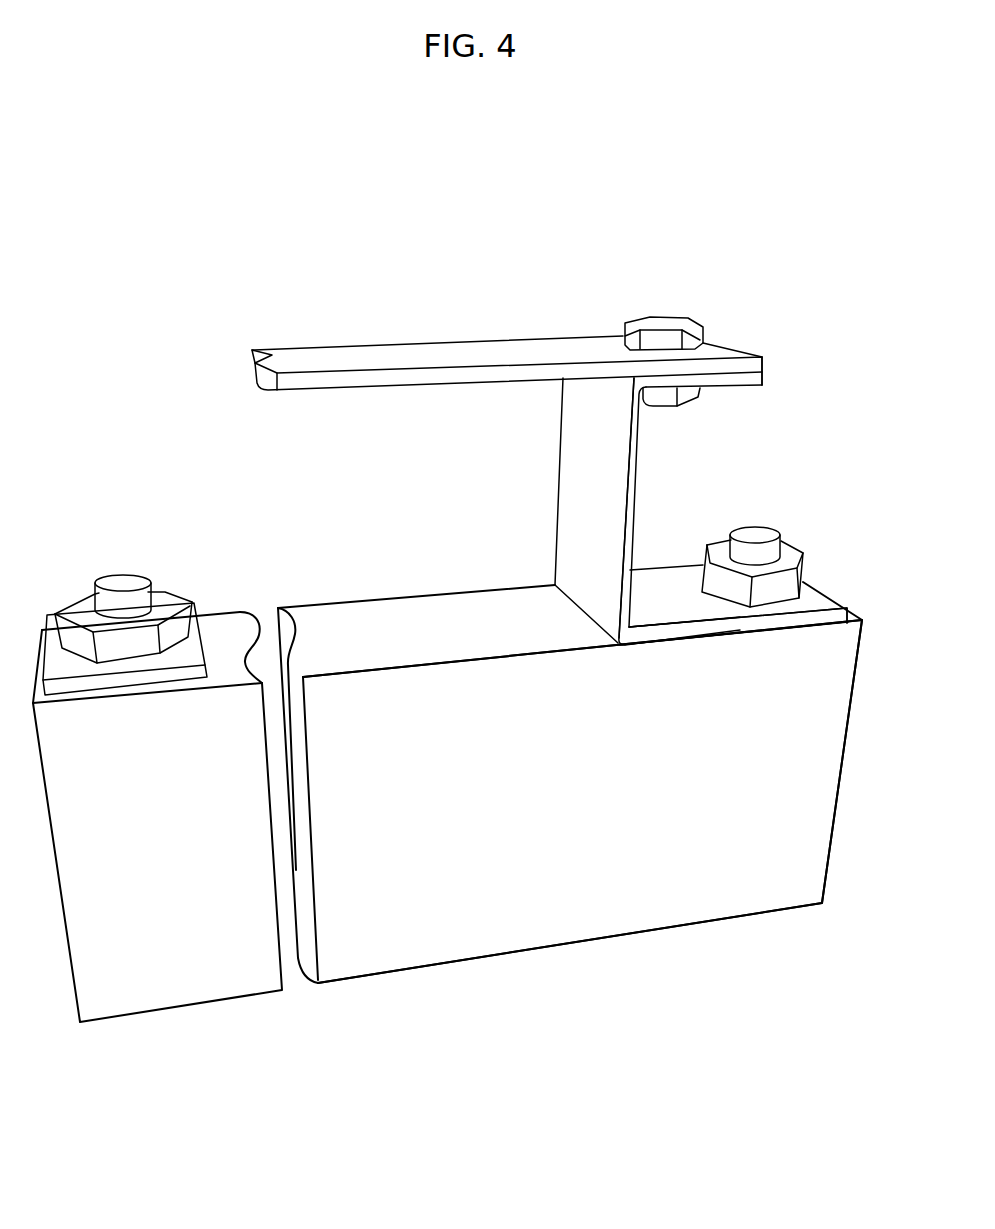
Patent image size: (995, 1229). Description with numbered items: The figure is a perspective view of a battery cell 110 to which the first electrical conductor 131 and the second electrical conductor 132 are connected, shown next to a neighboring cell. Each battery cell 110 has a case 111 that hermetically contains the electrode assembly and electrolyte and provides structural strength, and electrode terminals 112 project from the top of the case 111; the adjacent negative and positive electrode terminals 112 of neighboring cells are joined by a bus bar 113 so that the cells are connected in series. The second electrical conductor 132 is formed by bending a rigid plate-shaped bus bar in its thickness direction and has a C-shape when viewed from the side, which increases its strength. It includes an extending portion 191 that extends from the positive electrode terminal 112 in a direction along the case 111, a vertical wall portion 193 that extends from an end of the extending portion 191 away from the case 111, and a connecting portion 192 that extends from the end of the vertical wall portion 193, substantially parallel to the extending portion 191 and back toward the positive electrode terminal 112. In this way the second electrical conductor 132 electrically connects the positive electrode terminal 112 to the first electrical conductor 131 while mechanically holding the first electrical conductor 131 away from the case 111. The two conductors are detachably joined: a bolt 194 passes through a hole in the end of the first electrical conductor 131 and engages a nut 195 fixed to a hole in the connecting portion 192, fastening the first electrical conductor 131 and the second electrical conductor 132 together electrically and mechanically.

The battery cell 110 is at (565, 946).
The case 111 is at (655, 709).
The electrode terminal 112 is at (750, 530).
The bus bar 113 is at (192, 656).
The first electrical conductor 131 is at (416, 354).
The second electrical conductor 132 is at (753, 636).
The extending portion 191 is at (680, 586).
The connecting portion 192 is at (747, 378).
The vertical wall portion 193 is at (575, 478).
The bolt 194 is at (660, 322).
The nut 195 is at (698, 393).